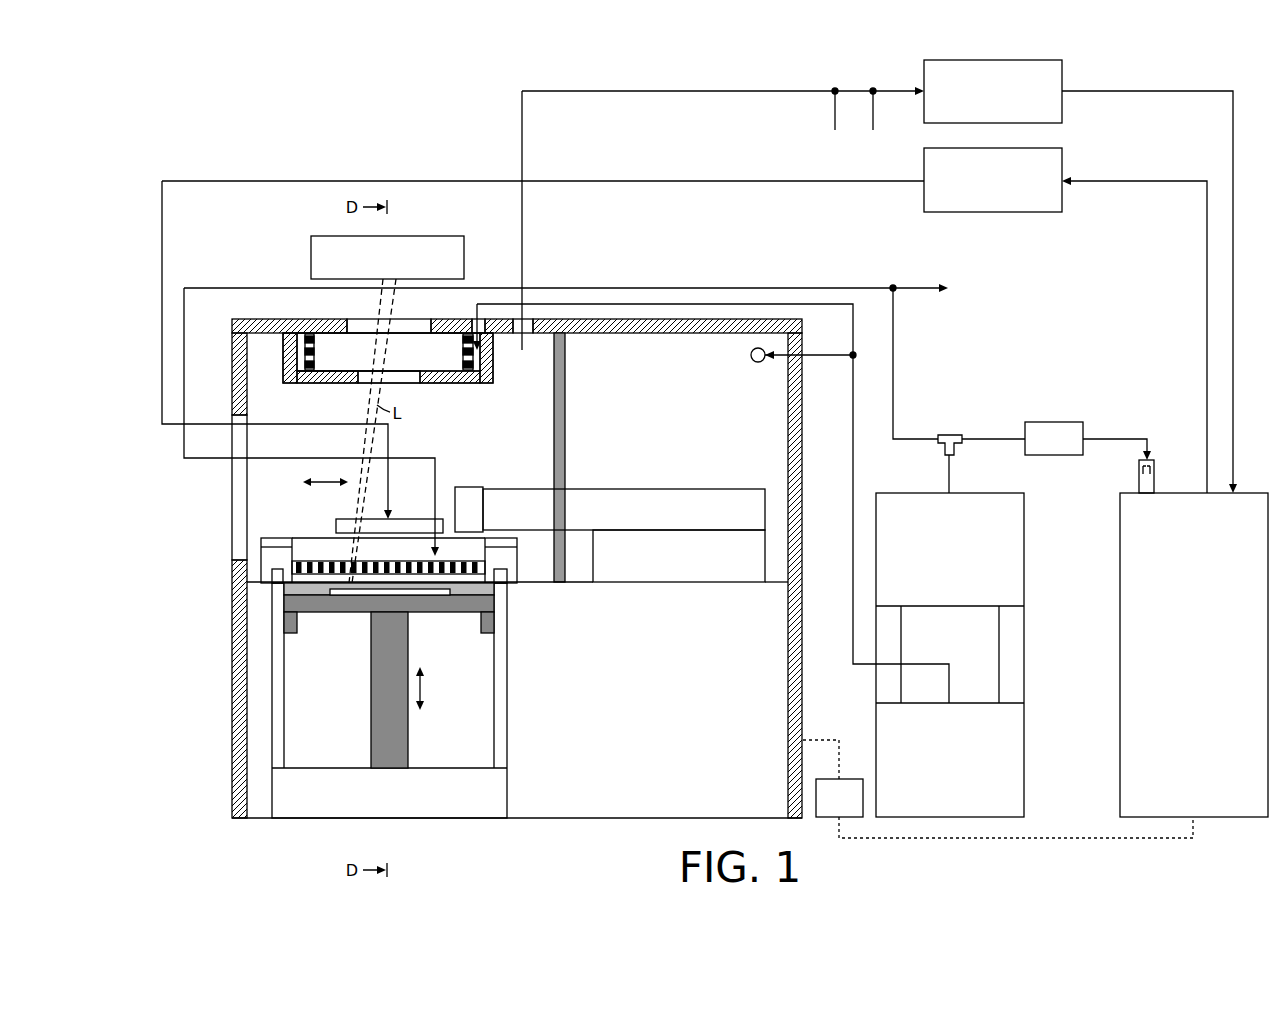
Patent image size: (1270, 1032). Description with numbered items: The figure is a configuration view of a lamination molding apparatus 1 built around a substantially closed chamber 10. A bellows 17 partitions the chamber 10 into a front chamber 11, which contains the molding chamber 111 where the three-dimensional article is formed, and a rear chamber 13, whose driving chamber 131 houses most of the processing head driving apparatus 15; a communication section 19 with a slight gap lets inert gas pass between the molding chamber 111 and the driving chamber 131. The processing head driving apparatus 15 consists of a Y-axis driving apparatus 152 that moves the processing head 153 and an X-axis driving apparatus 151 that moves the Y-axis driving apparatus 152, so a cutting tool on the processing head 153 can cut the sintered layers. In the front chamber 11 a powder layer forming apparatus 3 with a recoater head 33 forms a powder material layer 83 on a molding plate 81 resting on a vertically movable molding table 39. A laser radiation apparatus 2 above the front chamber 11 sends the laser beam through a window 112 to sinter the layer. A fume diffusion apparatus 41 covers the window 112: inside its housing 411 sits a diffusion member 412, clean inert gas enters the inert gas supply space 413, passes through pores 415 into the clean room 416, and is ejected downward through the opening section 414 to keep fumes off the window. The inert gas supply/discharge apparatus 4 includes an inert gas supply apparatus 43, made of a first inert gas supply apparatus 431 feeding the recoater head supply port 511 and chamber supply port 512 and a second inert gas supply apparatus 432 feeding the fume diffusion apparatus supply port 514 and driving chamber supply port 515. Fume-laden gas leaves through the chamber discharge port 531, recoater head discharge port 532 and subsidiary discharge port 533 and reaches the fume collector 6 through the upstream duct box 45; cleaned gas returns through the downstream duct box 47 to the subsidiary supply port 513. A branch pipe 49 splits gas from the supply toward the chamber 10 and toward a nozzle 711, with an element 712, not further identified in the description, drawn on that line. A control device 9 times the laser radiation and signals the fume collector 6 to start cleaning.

The lamination molding apparatus 1 is at (236, 142).
The laser radiation apparatus 2 is at (445, 236).
The powder layer forming apparatus 3 is at (296, 499).
The inert gas supply/discharge apparatus 4 is at (875, 208).
The fume collector 6 is at (1130, 555).
The control device 9 is at (852, 782).
The chamber 10 is at (260, 279).
The front chamber 11 is at (232, 337).
The rear chamber 13 is at (796, 373).
The processing head driving apparatus 15 is at (724, 471).
The bellows 17 is at (565, 427).
The communication section 19 is at (572, 339).
The recoater head 33 is at (287, 542).
The molding table 39 is at (312, 605).
The fume diffusion apparatus 41 is at (486, 402).
The inert gas supply apparatus 43 is at (1041, 525).
The duct box 45 is at (1052, 118).
The duct box 47 is at (1052, 205).
The branch pipe 49 is at (958, 433).
The molding plate 81 is at (413, 593).
The powder material layer 83 is at (435, 585).
The molding chamber 111 is at (420, 504).
The window 112 is at (403, 330).
The driving chamber 131 is at (726, 498).
The X-axis driving apparatus 151 is at (708, 572).
The Y-axis driving apparatus 152 is at (650, 497).
The processing head 153 is at (477, 485).
The housing 411 is at (493, 373).
The diffusion member 412 is at (316, 345).
The inert gas supply space 413 is at (303, 368).
The opening section 414 is at (407, 378).
The pores 415 is at (463, 365).
The clean room 416 is at (391, 357).
The first inert gas supply apparatus 431 is at (1017, 590).
The second inert gas supply apparatus 432 is at (1012, 717).
The recoater head supply port 511 is at (328, 560).
The chamber supply port 512 is at (590, 417).
The subsidiary supply port 513 is at (408, 522).
The fume diffusion apparatus supply port 514 is at (477, 310).
The driving chamber supply port 515 is at (753, 362).
The chamber discharge port 531 is at (835, 124).
The recoater head discharge port 532 is at (874, 124).
The subsidiary discharge port 533 is at (532, 338).
The nozzle 711 is at (1155, 482).
The flow regulator 712 is at (1070, 424).